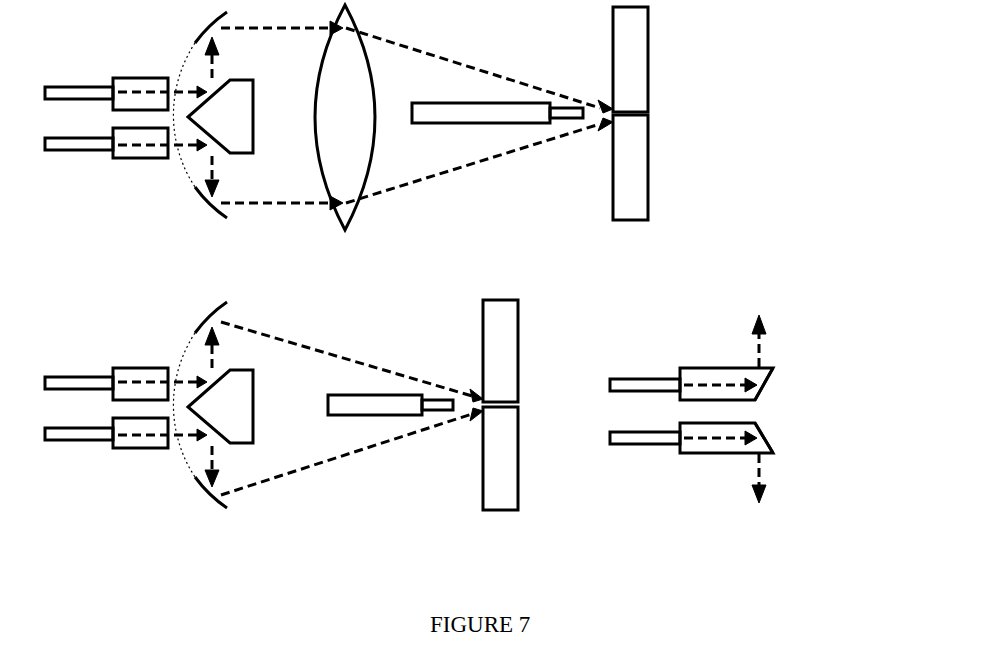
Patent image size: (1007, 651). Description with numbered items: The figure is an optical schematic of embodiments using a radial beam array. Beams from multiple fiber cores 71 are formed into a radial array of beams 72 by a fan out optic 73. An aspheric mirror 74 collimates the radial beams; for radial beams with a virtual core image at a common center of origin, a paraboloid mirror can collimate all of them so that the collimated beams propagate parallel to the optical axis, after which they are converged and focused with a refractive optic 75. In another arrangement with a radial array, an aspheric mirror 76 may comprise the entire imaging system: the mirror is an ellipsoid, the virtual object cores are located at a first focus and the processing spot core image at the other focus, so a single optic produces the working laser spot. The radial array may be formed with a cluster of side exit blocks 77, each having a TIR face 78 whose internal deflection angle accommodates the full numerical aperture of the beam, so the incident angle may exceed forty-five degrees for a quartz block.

The fiber cores 71 is at (73, 157).
The radial array of beams 72 is at (203, 70).
The fan out optic 73 is at (243, 108).
The aspheric mirror 74 is at (222, 218).
The refractive optic 75 is at (350, 212).
The aspheric mirror 76 is at (218, 508).
The side exit blocks 77 is at (708, 443).
The TIR face 78 is at (773, 393).